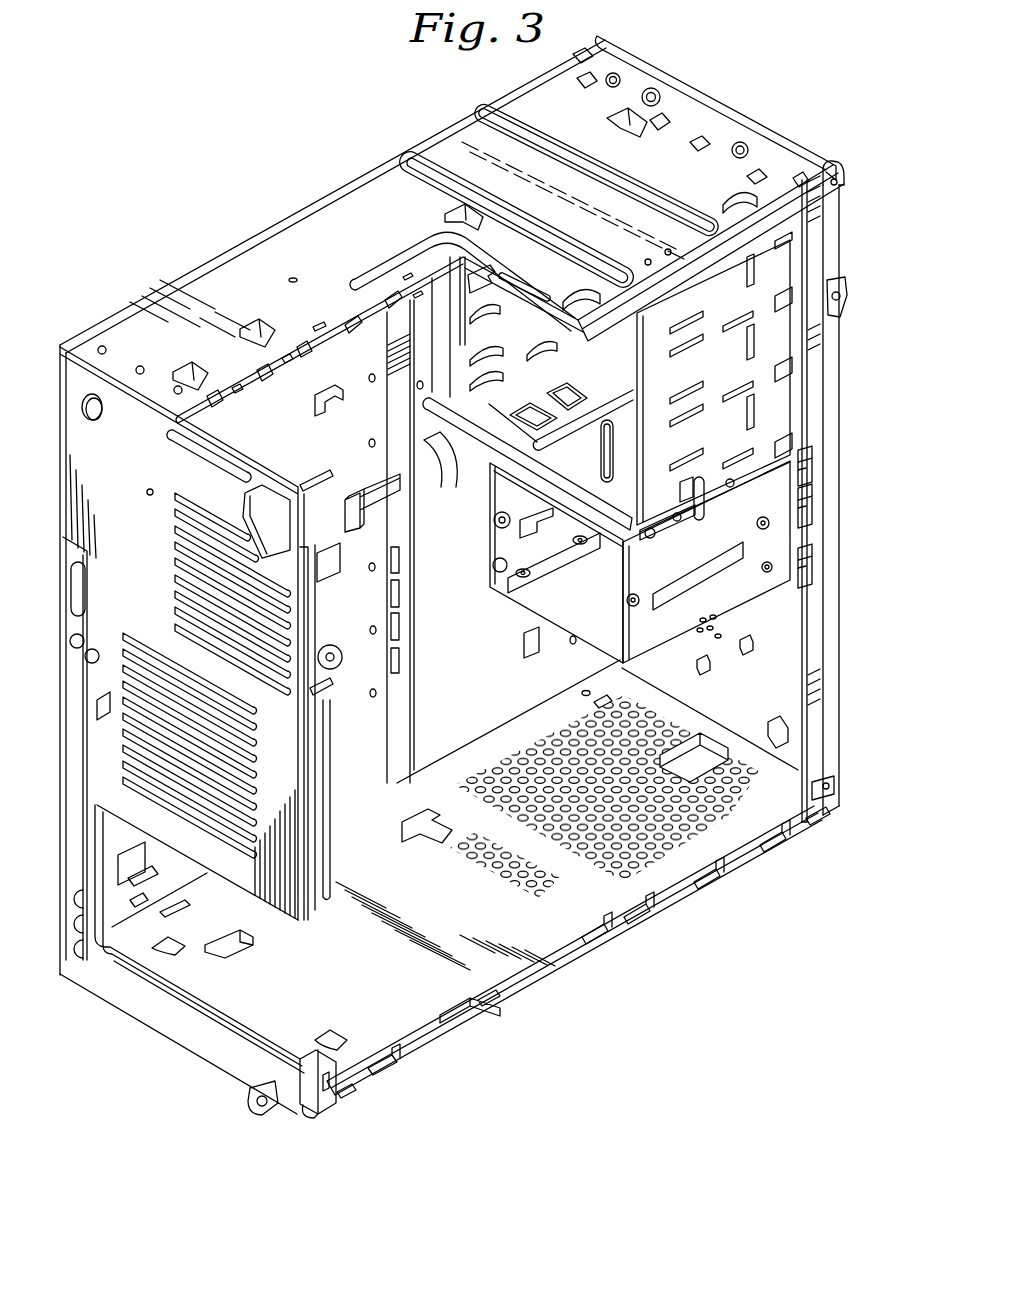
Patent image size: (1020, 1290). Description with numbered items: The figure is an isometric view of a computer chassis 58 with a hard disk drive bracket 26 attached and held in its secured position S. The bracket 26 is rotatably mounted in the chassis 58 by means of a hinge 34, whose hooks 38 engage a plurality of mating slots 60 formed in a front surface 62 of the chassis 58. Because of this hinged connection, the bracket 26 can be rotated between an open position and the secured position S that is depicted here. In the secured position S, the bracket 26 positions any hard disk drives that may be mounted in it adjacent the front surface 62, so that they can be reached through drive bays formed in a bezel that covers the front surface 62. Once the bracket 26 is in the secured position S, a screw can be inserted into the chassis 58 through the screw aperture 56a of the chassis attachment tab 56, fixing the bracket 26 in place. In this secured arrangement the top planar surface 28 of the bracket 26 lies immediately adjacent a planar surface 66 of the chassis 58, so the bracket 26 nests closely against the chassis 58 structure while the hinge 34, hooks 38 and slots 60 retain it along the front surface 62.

The bracket 26 is at (676, 636).
The top planar surface 28 is at (492, 463).
The hinge 34 is at (790, 568).
The hooks 38 is at (810, 572).
The chassis attachment tab 56 is at (700, 478).
The screw aperture 56a is at (679, 486).
The computer chassis 58 is at (364, 143).
The mating slots 60 is at (808, 560).
The front surface 62 is at (831, 243).
The planar surface 66 is at (487, 420).
The secured position S is at (508, 592).